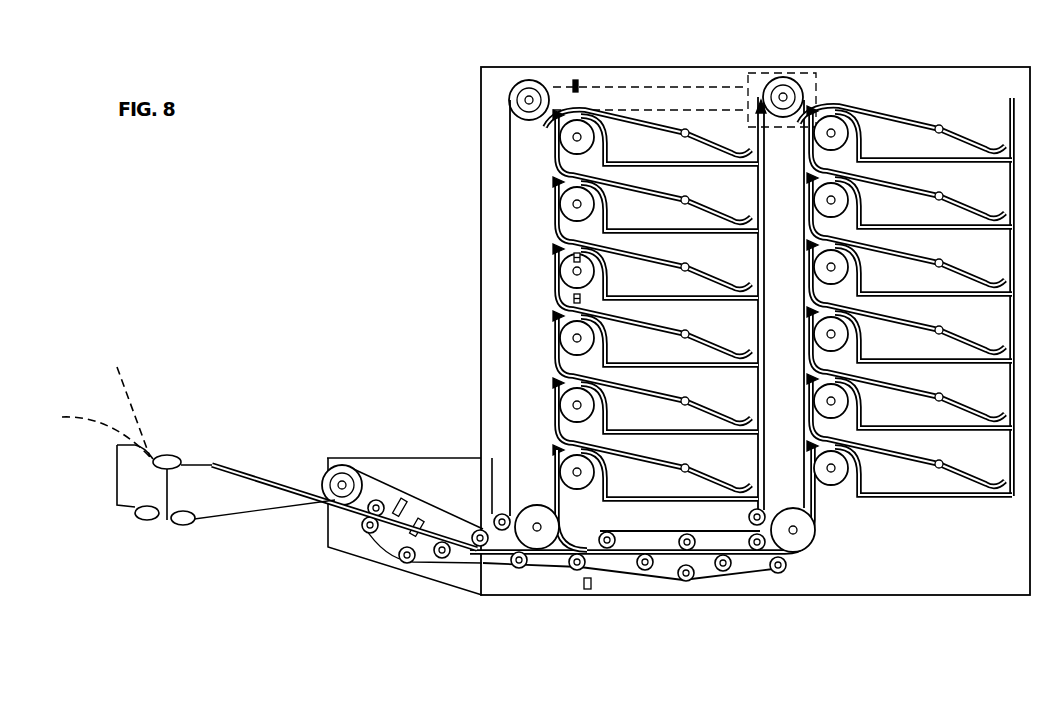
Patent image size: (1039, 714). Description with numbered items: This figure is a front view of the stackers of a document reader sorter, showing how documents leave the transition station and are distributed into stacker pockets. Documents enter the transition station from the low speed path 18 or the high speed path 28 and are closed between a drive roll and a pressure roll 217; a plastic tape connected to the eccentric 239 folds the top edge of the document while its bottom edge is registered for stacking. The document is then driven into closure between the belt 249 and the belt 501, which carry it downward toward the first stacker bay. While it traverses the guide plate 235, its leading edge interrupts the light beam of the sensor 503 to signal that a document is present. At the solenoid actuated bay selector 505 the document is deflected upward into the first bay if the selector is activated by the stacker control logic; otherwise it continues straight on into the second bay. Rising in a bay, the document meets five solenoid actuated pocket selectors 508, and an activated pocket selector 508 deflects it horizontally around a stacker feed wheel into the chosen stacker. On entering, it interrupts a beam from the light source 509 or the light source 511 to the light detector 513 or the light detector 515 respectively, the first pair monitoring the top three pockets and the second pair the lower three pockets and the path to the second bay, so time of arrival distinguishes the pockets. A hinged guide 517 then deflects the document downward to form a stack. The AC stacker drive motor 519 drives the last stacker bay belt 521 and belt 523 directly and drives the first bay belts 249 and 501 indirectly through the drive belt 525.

The low speed path 18 is at (95, 425).
The high speed path 28 is at (137, 405).
The pressure roll 217 is at (183, 527).
The guide plate 235 is at (228, 502).
The eccentric 239 is at (173, 454).
The belt 249 is at (378, 468).
The belt 501 is at (430, 563).
The sensor 503 is at (398, 536).
The solenoid actuated bay selector 505 is at (551, 552).
The solenoid actuated pocket selector 508 is at (706, 328).
The light source 509 is at (576, 80).
The light source 511 is at (572, 298).
The light detector 513 is at (572, 258).
The light detector 515 is at (587, 590).
The hinged guide 517 is at (700, 478).
The AC stacker drive motor 519 is at (818, 77).
The last stacker bay belt 521 is at (812, 438).
The last stacker bay belt 523 is at (745, 575).
The drive belt 525 is at (660, 87).